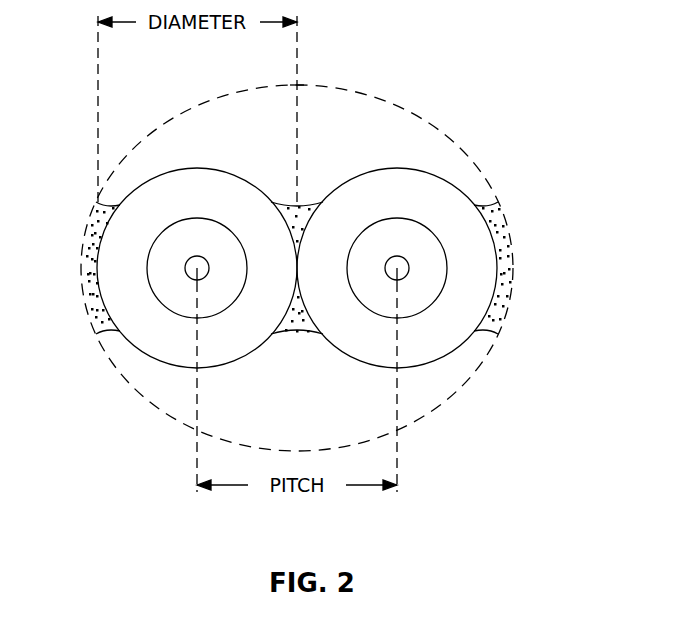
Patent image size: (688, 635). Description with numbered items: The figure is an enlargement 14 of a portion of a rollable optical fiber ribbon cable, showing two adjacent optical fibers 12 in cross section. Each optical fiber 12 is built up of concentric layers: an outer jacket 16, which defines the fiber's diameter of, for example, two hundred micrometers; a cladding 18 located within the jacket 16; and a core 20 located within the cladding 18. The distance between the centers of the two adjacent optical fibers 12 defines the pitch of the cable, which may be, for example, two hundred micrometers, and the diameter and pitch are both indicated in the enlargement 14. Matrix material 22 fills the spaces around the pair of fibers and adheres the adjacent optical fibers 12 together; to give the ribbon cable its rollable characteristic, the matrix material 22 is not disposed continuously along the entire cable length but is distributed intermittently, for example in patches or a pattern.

The optical fiber 12 is at (172, 398).
The enlargement 14 is at (387, 102).
The jacket 16 is at (179, 169).
The cladding 18 is at (150, 290).
The core 20 is at (185, 270).
The matrix material 22 is at (105, 338).